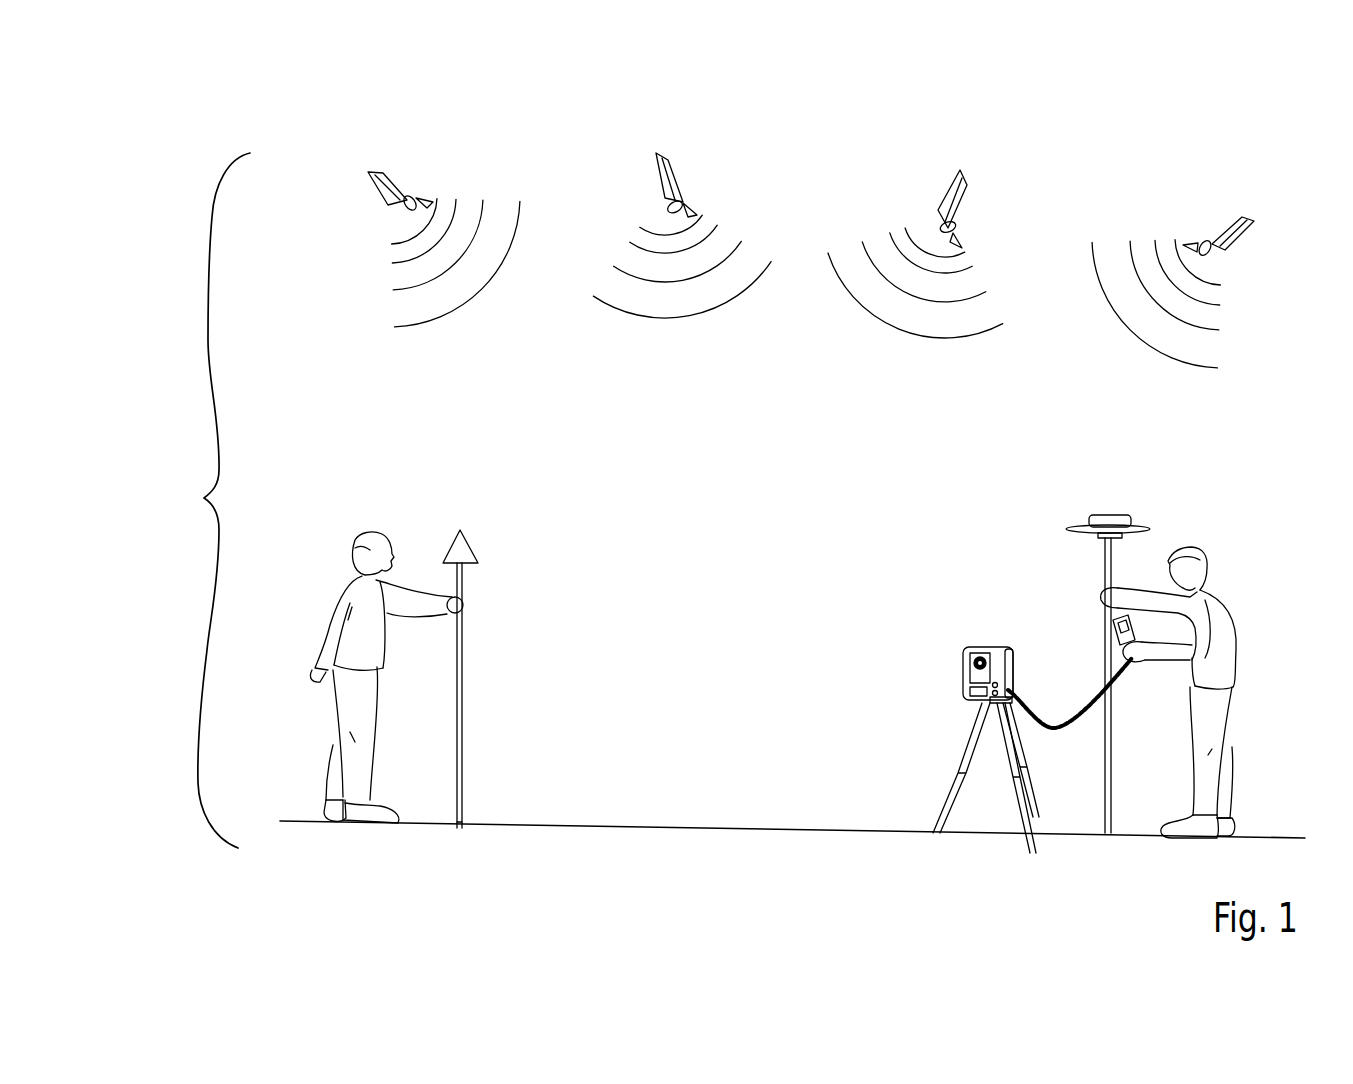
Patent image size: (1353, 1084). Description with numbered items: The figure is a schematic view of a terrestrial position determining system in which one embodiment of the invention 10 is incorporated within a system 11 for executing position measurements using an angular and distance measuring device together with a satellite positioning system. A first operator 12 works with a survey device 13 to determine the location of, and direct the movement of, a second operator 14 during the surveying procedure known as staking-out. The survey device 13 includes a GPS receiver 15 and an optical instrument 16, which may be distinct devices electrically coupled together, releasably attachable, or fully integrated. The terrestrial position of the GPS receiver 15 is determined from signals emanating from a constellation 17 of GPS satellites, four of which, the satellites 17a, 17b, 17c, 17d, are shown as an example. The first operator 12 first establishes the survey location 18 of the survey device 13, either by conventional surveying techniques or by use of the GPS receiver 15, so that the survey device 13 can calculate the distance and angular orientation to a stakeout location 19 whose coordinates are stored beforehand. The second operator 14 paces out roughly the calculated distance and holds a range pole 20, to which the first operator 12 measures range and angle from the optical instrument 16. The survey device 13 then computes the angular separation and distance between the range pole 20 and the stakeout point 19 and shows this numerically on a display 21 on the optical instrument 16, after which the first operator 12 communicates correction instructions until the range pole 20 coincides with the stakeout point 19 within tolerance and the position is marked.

The invention 10 is at (740, 603).
The system 11 is at (218, 500).
The first operator 12 is at (1202, 550).
The survey device 13 is at (940, 603).
The second operator 14 is at (338, 593).
The GPS receiver 15 is at (1117, 514).
The optical instrument 16 is at (960, 670).
The constellation of GPS satellites 17 is at (306, 142).
The GPS satellite 17a is at (405, 186).
The GPS satellite 17b is at (677, 167).
The GPS satellite 17c is at (943, 200).
The GPS satellite 17d is at (1200, 232).
The survey location 18 is at (1030, 853).
The stakeout location 19 is at (457, 828).
The range pole 20 is at (465, 668).
The display 21 is at (978, 702).